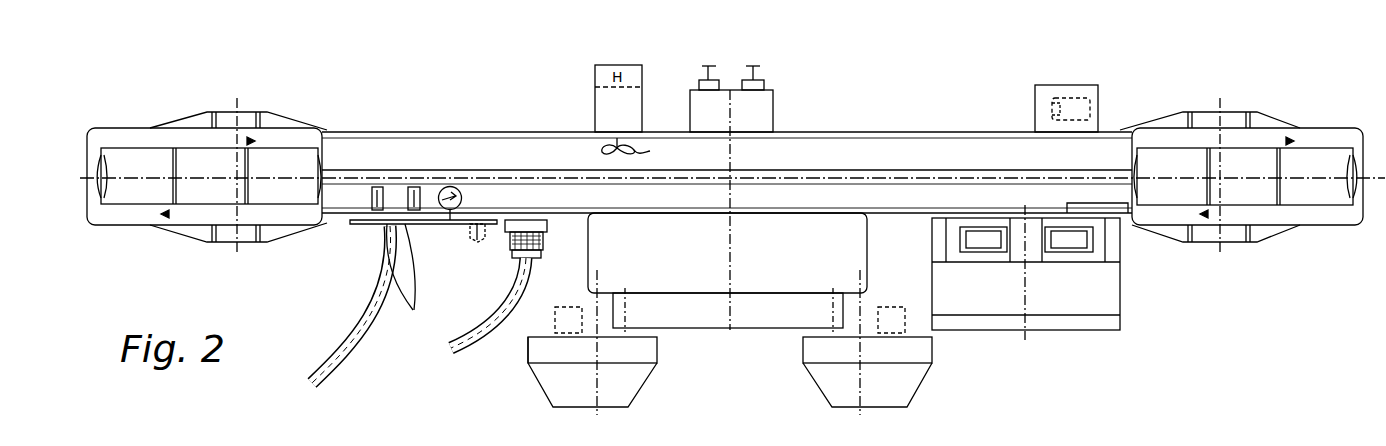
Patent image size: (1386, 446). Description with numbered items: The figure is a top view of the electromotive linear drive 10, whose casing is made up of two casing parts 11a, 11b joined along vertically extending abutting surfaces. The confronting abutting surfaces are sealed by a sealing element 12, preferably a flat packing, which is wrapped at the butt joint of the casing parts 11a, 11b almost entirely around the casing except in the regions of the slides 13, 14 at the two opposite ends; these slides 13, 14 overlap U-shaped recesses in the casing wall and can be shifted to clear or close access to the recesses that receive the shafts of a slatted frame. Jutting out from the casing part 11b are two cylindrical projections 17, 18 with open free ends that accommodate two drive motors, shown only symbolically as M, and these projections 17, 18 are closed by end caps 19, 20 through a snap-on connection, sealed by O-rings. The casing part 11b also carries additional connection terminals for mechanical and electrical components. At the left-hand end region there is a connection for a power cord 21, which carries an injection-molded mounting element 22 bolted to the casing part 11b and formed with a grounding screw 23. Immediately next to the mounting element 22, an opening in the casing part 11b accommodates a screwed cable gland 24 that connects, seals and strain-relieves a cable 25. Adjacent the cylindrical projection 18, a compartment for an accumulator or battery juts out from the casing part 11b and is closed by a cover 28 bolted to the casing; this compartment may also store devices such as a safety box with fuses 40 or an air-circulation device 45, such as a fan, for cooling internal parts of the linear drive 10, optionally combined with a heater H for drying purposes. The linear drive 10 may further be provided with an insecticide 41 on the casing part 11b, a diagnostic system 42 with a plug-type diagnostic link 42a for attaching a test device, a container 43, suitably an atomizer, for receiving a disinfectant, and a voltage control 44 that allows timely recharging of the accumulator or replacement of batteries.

The linear drive 10 is at (650, 120).
The casing part 11a is at (435, 145).
The casing part 11b is at (352, 195).
The sealing element 12 is at (843, 177).
The slide 13 is at (1315, 137).
The slide 14 is at (131, 140).
The cylindrical projection 17 is at (534, 325).
The cylindrical projection 18 is at (900, 257).
The end cap 19 is at (558, 385).
The end cap 20 is at (847, 382).
The power cord 21 is at (370, 335).
The mounting element 22 is at (372, 224).
The grounding screw 23 is at (473, 242).
The screwed cable gland 24 is at (537, 222).
The cable 25 is at (460, 356).
The cover 28 is at (1070, 322).
The fuses 40 is at (412, 282).
The insecticide 41 is at (1130, 214).
The diagnostic system 42 is at (723, 102).
The plug-type diagnostic link 42a is at (762, 83).
The container 43 is at (1093, 83).
The voltage control 44 is at (436, 224).
The air-circulation device 45 is at (650, 151).